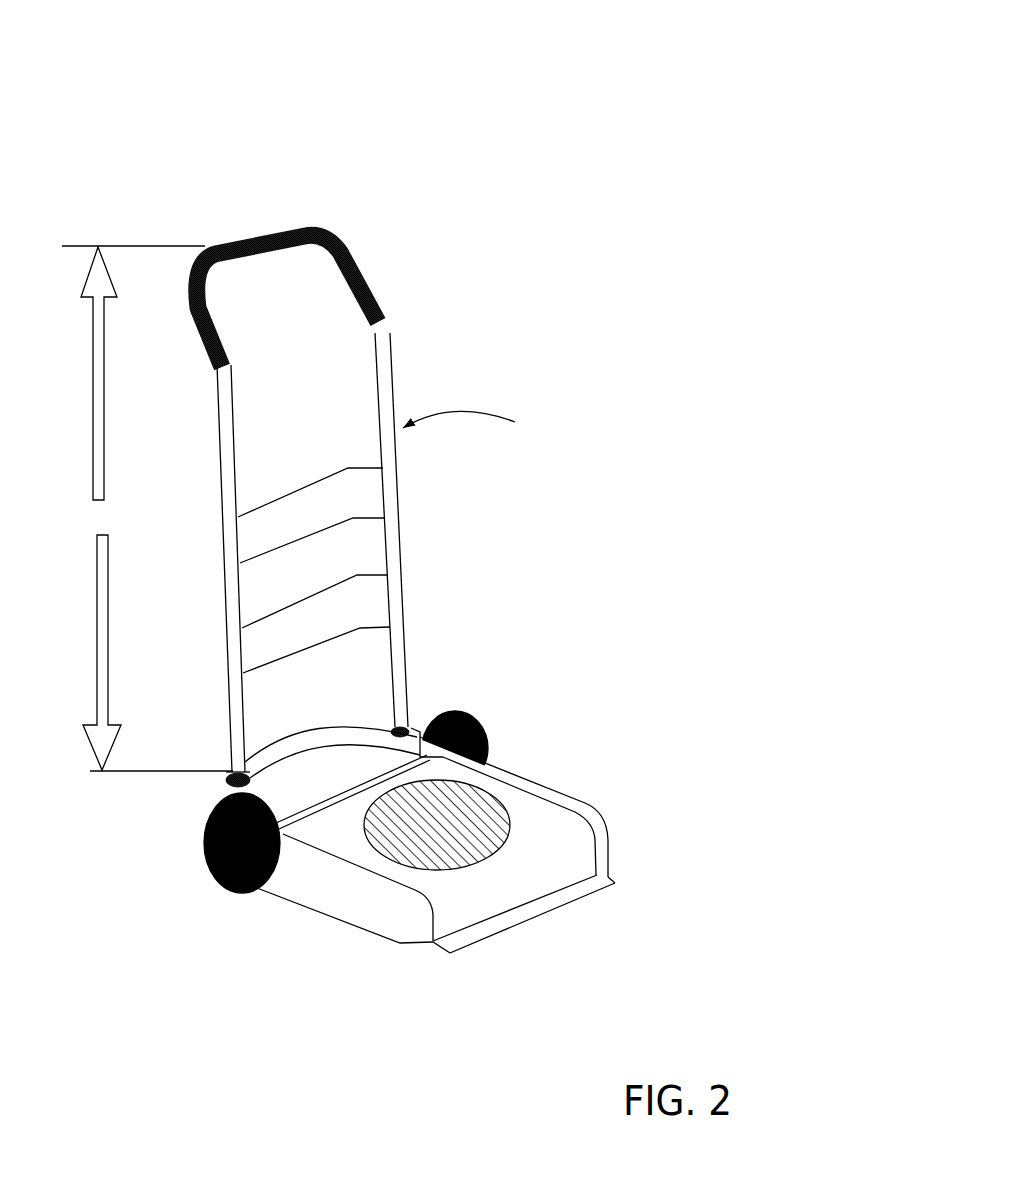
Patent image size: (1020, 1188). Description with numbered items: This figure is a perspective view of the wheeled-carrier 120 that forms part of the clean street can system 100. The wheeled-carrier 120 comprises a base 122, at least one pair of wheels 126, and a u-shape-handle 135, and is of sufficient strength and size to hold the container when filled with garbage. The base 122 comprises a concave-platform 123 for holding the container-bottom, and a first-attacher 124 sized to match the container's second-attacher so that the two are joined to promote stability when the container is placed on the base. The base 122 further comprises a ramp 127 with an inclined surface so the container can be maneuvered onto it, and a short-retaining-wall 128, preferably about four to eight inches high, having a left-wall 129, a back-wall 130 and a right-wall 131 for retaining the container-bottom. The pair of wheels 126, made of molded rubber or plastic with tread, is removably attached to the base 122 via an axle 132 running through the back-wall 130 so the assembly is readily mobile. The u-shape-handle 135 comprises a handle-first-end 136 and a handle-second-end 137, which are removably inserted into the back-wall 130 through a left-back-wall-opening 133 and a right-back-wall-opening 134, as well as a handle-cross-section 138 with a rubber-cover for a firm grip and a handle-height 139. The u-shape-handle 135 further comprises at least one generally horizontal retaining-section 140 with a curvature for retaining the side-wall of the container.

The clean street can system 100 is at (698, 62).
The wheeled-carrier 120 is at (717, 92).
The base 122 is at (520, 880).
The concave-platform 123 is at (522, 823).
The first-attacher 124 is at (487, 843).
The pair of wheels 126 is at (480, 722).
The ramp 127 is at (455, 957).
The short-retaining-wall 128 is at (567, 792).
The left-wall 129 is at (523, 773).
The back-wall 130 is at (273, 745).
The right-wall 131 is at (368, 870).
The axle 132 is at (302, 815).
The left-back-wall-opening 133 is at (413, 731).
The right-back-wall-opening 134 is at (226, 789).
The u-shape-handle 135 is at (395, 348).
The handle-first-end 136 is at (408, 723).
The handle-second-end 137 is at (222, 772).
The handle-cross-section 138 is at (250, 235).
The handle-height 139 is at (147, 508).
The retaining-section 140 is at (360, 502).